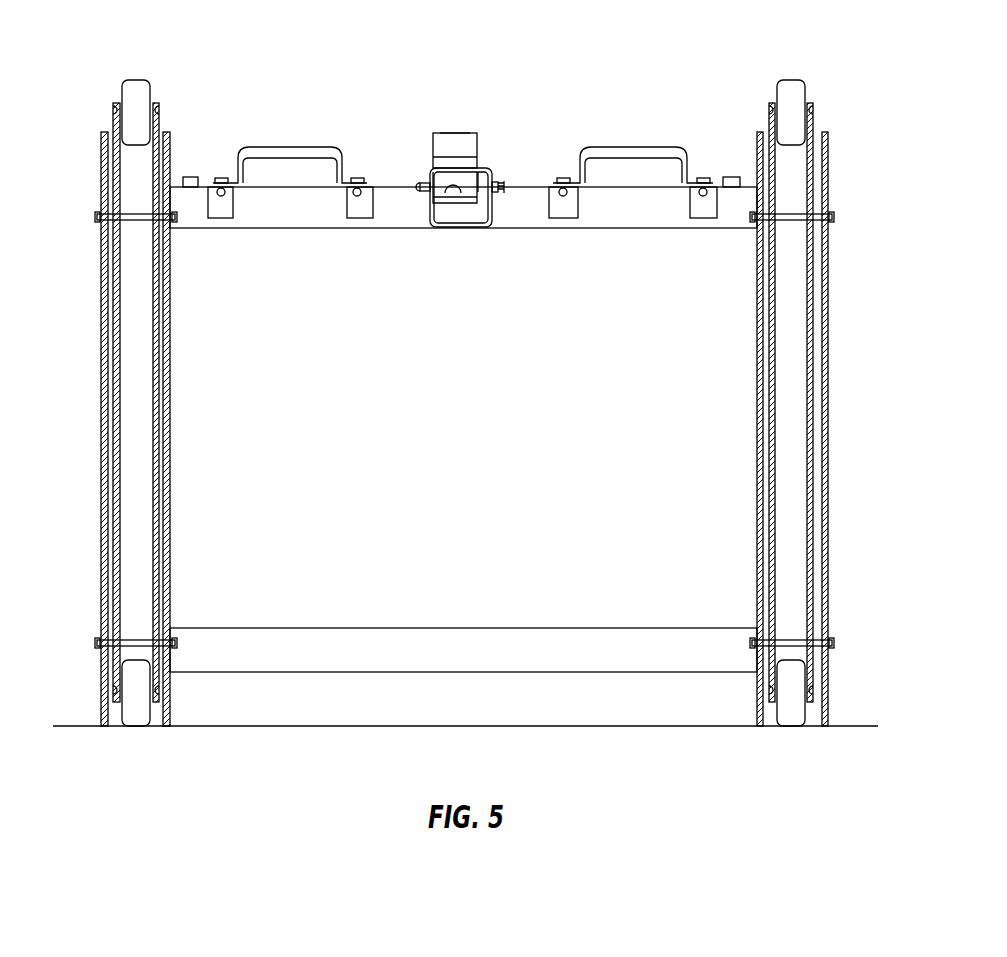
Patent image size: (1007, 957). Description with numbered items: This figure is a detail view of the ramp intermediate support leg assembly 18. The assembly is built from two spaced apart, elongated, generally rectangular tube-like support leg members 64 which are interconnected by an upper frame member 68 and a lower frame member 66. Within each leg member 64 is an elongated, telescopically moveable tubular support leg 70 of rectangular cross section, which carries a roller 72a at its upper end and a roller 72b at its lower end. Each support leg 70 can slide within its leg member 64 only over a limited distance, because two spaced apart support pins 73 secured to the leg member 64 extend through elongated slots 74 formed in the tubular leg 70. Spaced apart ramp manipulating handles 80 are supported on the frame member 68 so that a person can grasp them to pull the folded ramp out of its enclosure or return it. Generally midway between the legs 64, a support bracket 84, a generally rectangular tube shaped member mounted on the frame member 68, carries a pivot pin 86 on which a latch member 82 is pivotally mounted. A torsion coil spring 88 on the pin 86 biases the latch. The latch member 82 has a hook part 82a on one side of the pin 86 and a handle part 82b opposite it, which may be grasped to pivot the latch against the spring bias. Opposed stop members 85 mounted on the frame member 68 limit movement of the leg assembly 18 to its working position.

The intermediate support leg assembly 18 is at (583, 90).
The support leg member 64 is at (101, 166).
The frame member 66 is at (415, 627).
The frame member 68 is at (282, 230).
The tubular support leg 70 is at (118, 408).
The roller 72a is at (138, 80).
The roller 72b is at (138, 727).
The support pin 73 is at (137, 223).
The elongated slot 74 is at (115, 193).
The ramp manipulating handle 80 is at (308, 147).
The latch member 82 is at (446, 140).
The hook part 82a is at (463, 132).
The handle part 82b is at (455, 183).
The support bracket 84 is at (428, 213).
The stop member 85 is at (190, 177).
The pivot pin 86 is at (423, 185).
The torsion coil spring 88 is at (480, 172).